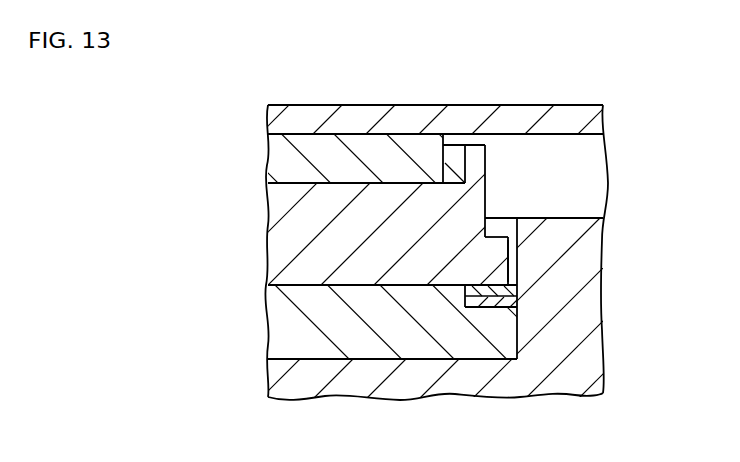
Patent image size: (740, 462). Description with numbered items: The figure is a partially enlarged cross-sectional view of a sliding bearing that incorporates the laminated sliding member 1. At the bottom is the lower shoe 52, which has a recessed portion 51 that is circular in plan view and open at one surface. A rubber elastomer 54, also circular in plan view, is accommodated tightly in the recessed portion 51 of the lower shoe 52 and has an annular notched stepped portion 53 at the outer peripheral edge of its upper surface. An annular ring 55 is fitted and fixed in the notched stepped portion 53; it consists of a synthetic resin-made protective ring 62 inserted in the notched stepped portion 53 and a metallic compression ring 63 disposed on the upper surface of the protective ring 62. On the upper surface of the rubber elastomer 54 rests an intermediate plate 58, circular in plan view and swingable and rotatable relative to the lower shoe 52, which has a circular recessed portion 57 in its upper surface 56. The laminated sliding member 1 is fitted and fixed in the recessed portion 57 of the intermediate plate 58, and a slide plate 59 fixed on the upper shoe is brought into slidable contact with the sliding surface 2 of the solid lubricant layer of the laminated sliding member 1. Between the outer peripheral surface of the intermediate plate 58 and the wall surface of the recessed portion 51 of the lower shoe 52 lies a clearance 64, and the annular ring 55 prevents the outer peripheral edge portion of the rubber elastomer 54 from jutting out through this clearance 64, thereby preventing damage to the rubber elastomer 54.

The laminated sliding member 1 is at (363, 152).
The sliding surface 2 is at (311, 133).
The recessed portion 51 is at (341, 352).
The lower shoe 52 is at (574, 318).
The annular notched stepped portion 53 is at (481, 303).
The rubber elastomer 54 is at (296, 322).
The annular ring 55 is at (506, 289).
The upper surface 56 is at (480, 146).
The recessed portion 57 is at (455, 162).
The intermediate plate 58 is at (285, 240).
The slide plate 59 is at (574, 121).
The protective ring 62 is at (511, 302).
The compression ring 63 is at (500, 273).
The clearance 64 is at (515, 250).